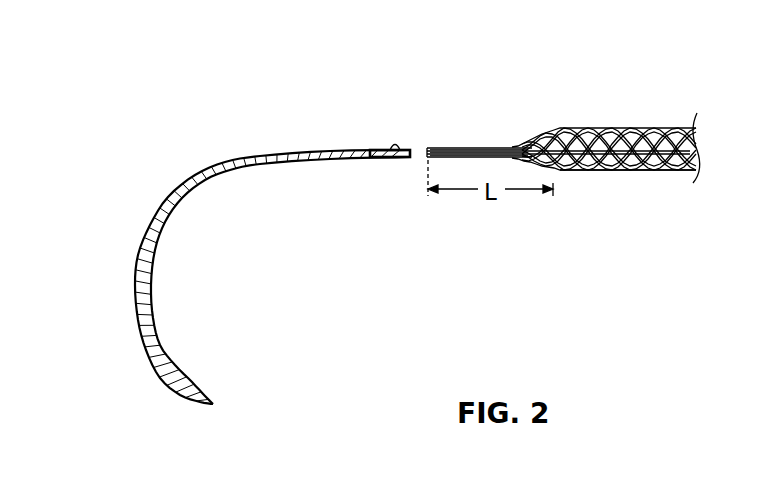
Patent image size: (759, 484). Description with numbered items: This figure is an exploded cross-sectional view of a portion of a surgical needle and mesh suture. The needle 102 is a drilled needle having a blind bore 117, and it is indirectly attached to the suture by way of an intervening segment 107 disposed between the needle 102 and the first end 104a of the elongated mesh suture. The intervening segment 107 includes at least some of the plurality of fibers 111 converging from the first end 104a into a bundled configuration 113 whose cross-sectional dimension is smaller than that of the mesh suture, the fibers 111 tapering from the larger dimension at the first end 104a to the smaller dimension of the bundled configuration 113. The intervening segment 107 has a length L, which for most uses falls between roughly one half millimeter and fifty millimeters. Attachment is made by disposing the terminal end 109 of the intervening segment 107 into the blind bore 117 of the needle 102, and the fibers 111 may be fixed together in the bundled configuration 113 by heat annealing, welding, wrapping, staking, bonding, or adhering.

The surgical needle 102 is at (227, 163).
The blind bore 117 is at (398, 145).
The terminal end 109 is at (463, 150).
The intervening segment 107 is at (518, 144).
The plurality of fibers 111 is at (562, 137).
The bundled configuration 113 is at (562, 137).
The first end 104a is at (590, 172).